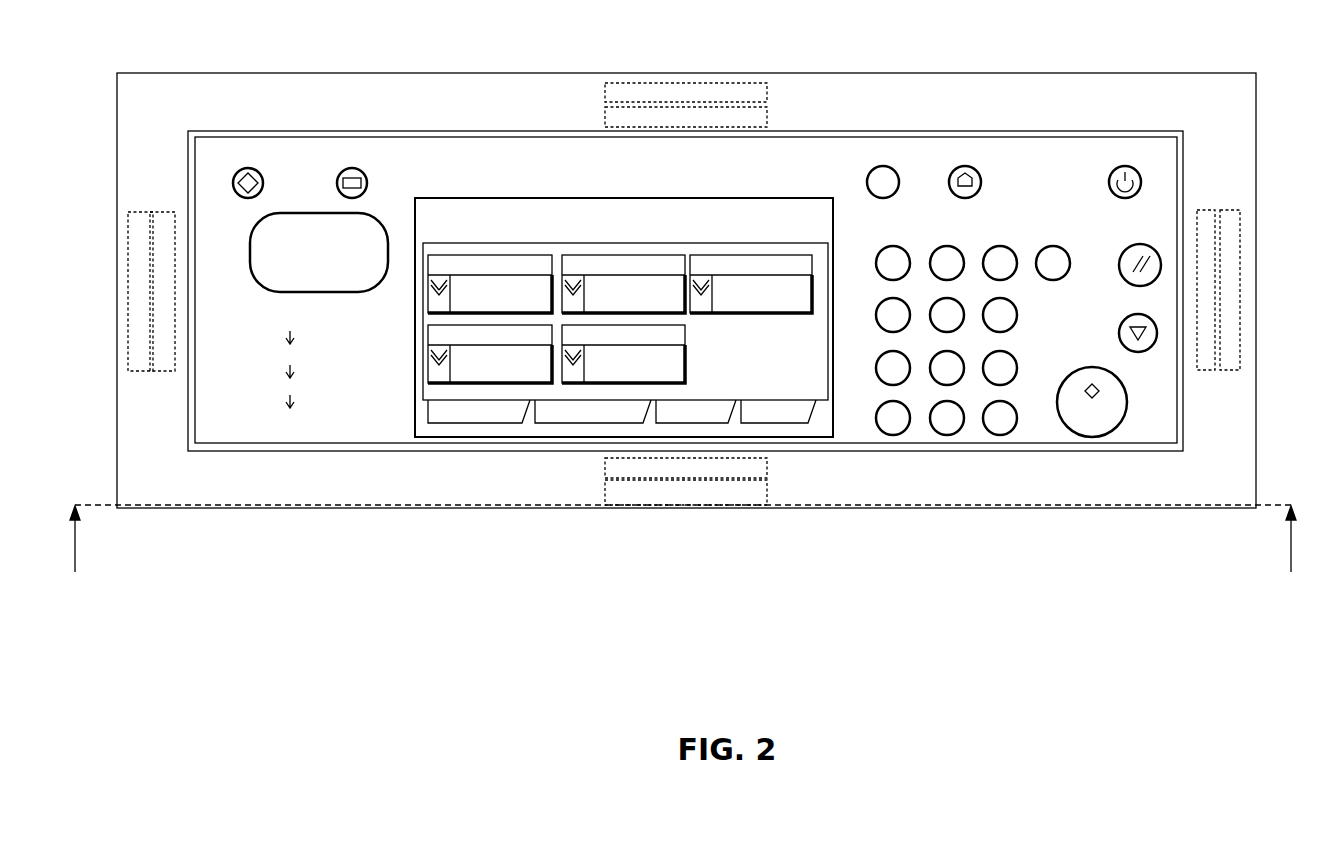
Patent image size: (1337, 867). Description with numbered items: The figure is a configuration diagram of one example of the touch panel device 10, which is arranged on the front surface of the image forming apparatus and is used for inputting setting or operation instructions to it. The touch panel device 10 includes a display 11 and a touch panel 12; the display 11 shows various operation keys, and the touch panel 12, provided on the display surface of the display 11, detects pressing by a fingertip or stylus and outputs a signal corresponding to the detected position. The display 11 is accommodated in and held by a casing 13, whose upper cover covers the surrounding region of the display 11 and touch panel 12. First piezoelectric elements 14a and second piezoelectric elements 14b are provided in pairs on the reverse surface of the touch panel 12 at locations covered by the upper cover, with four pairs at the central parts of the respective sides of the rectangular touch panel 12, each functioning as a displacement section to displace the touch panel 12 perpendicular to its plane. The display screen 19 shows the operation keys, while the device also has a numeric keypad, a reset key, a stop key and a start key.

The touch panel device 10 is at (965, 43).
The display 11 is at (685, 229).
The touch panel 12 is at (850, 133).
The casing 13 is at (1232, 73).
The first piezoelectric element 14a is at (735, 83).
The second piezoelectric element 14b is at (767, 120).
The touch panel display screen 19 is at (680, 198).